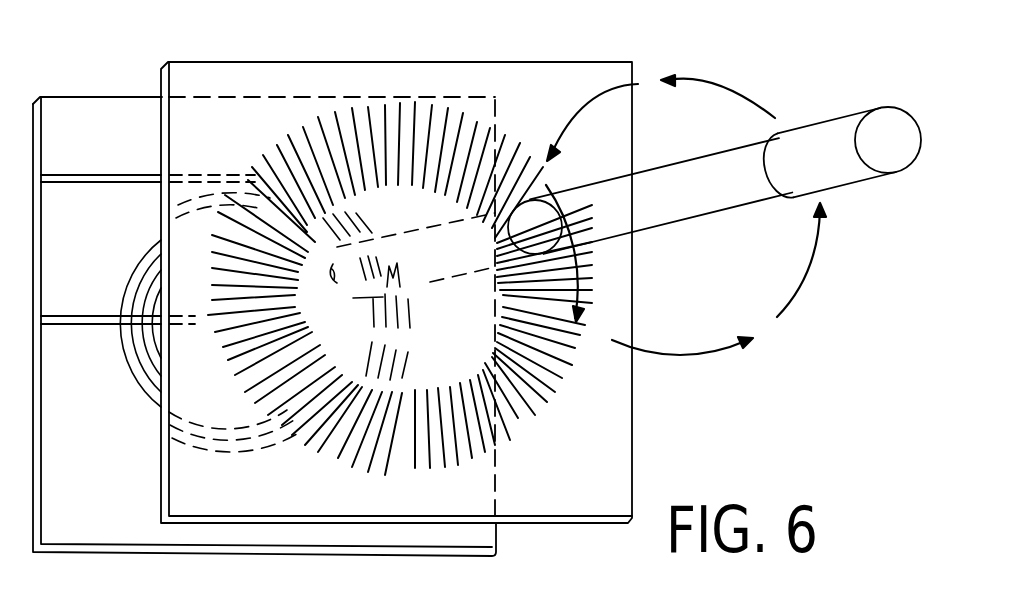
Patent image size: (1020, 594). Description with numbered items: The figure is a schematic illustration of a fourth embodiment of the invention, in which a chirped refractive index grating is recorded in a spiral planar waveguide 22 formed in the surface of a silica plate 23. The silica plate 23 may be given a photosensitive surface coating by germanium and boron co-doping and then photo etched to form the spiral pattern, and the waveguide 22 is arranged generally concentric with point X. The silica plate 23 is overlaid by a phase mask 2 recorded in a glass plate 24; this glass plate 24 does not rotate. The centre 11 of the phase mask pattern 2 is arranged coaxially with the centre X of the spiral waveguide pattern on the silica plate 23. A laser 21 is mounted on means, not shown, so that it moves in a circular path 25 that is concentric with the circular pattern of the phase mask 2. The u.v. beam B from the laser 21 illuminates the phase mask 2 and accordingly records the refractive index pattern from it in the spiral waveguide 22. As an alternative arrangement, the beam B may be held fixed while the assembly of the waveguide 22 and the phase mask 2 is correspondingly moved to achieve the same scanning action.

The phase mask 2 is at (516, 415).
The centre of the pattern 11 is at (388, 288).
The laser 21 is at (843, 117).
The spiral planar waveguide 22 is at (97, 185).
The silica plate 23 is at (100, 93).
The glass plate 24 is at (633, 428).
The circular path 25 is at (797, 300).
The beam B is at (730, 210).
The point X is at (210, 322).